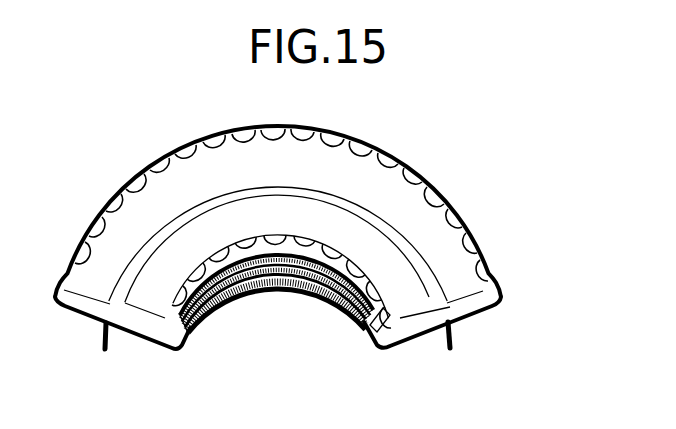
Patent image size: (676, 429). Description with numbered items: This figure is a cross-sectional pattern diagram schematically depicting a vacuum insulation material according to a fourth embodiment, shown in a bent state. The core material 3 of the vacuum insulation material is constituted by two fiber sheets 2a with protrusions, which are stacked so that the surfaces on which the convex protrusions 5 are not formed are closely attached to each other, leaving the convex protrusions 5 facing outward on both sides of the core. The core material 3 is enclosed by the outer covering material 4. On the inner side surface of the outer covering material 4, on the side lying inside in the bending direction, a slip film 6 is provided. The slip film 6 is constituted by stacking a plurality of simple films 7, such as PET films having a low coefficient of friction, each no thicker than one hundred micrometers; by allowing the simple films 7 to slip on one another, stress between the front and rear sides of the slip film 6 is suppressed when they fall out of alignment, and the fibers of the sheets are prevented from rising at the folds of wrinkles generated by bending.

The fiber sheet with protrusions 2a is at (403, 188).
The core material 3 is at (450, 310).
The outer covering material 4 is at (472, 227).
The convex protrusions 5 is at (349, 150).
The slip film 6 is at (386, 334).
The simple film 7 is at (212, 312).